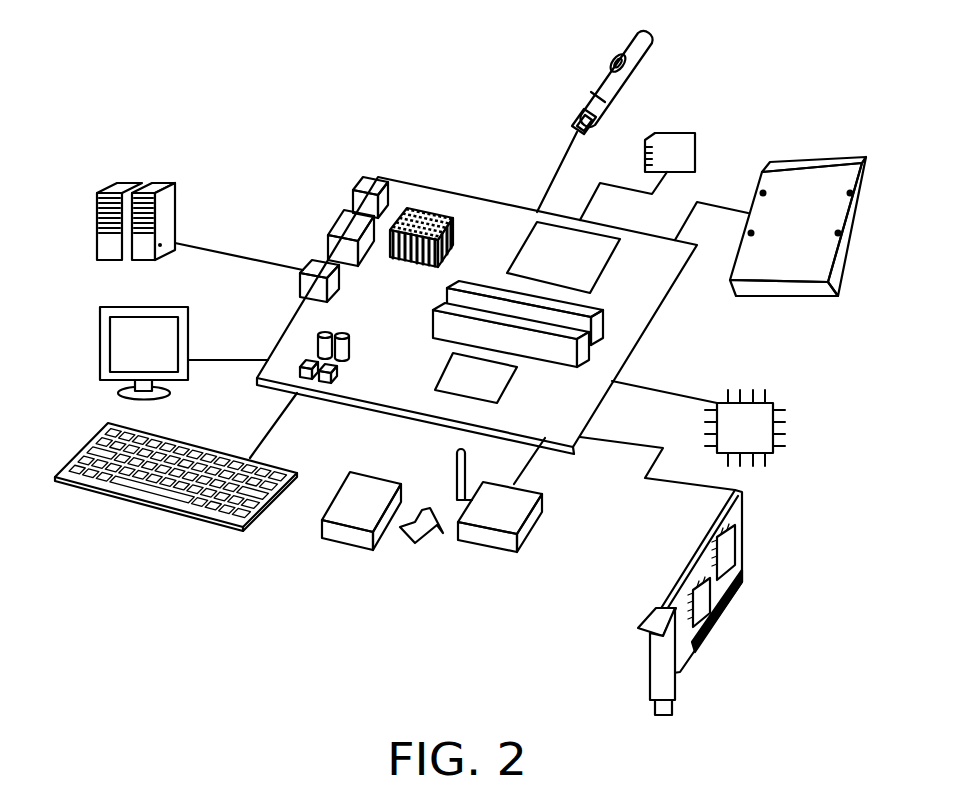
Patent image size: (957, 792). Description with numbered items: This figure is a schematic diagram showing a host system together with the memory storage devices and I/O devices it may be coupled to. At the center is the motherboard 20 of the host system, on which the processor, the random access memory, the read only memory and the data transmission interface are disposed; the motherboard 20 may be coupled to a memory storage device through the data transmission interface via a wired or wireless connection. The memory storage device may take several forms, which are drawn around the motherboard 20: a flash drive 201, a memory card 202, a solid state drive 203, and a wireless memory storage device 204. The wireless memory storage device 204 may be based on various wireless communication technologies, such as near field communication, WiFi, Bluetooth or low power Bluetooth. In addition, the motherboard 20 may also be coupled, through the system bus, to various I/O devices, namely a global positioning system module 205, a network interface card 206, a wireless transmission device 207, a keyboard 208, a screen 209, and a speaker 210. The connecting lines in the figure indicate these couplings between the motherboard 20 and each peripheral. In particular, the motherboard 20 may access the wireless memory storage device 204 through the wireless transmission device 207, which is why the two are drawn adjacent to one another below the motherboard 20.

The motherboard 20 is at (478, 218).
The flash drive 201 is at (598, 75).
The memory card 202 is at (699, 141).
The solid state drive 203 is at (818, 161).
The wireless memory storage device 204 is at (340, 485).
The global positioning system module 205 is at (776, 424).
The network interface card 206 is at (743, 551).
The wireless transmission device 207 is at (535, 534).
The keyboard 208 is at (177, 514).
The screen 209 is at (100, 363).
The speaker 210 is at (97, 247).